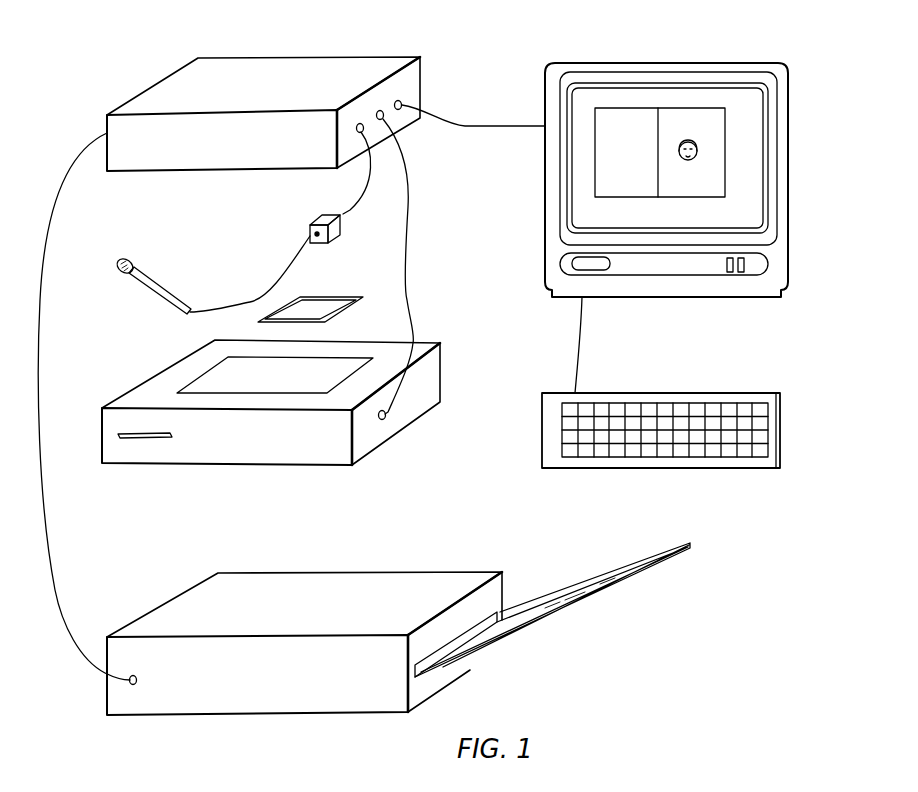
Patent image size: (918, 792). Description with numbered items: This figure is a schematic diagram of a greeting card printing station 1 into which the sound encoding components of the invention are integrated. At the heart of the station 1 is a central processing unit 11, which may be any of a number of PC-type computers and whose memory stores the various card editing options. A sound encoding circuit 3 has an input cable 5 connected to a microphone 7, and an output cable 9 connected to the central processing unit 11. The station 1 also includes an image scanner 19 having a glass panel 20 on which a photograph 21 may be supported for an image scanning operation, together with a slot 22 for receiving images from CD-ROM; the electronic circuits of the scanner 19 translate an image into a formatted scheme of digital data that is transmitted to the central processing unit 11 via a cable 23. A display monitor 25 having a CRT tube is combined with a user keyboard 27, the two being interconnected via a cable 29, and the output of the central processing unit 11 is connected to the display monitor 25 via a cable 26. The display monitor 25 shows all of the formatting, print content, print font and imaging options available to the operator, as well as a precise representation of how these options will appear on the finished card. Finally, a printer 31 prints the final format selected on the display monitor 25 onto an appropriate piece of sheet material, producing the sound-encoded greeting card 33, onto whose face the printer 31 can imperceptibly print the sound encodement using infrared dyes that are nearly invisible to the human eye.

The greeting card printing station 1 is at (134, 62).
The sound encoding circuit 3 is at (342, 237).
The input cable 5 is at (255, 299).
The microphone 7 is at (160, 290).
The output cable 9 is at (361, 197).
The central processing unit 11 is at (268, 97).
The image scanner 19 is at (260, 450).
The glass panel 20 is at (213, 373).
The photograph 21 is at (313, 307).
The slot 22 is at (130, 440).
The cable 23 is at (405, 263).
The display monitor 25 is at (542, 182).
The cable 26 is at (482, 124).
The user keyboard 27 is at (720, 393).
The cable 29 is at (582, 360).
The printer 31 is at (334, 619).
The card 33 is at (590, 592).